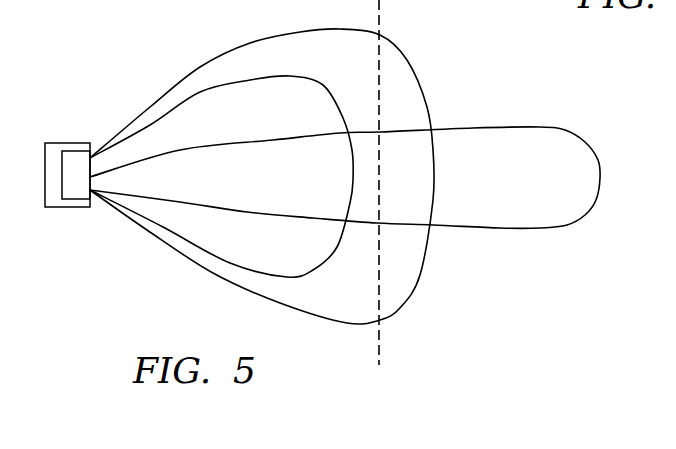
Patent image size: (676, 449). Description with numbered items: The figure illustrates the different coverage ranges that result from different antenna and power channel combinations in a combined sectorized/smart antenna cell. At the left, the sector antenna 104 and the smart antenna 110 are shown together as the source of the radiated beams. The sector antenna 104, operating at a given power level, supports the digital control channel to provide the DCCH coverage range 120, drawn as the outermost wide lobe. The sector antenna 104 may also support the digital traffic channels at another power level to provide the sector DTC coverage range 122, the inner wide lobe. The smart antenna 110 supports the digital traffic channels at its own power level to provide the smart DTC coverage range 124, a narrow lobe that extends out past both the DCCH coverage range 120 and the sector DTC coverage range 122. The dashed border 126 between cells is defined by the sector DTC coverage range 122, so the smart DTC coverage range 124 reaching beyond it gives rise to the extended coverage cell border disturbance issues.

The sector antenna 104 is at (62, 143).
The smart antenna 110 is at (78, 200).
The DCCH coverage range 120 is at (335, 29).
The sector DTC coverage range 122 is at (222, 92).
The smart DTC coverage range 124 is at (540, 127).
The border between cells 126 is at (378, 15).